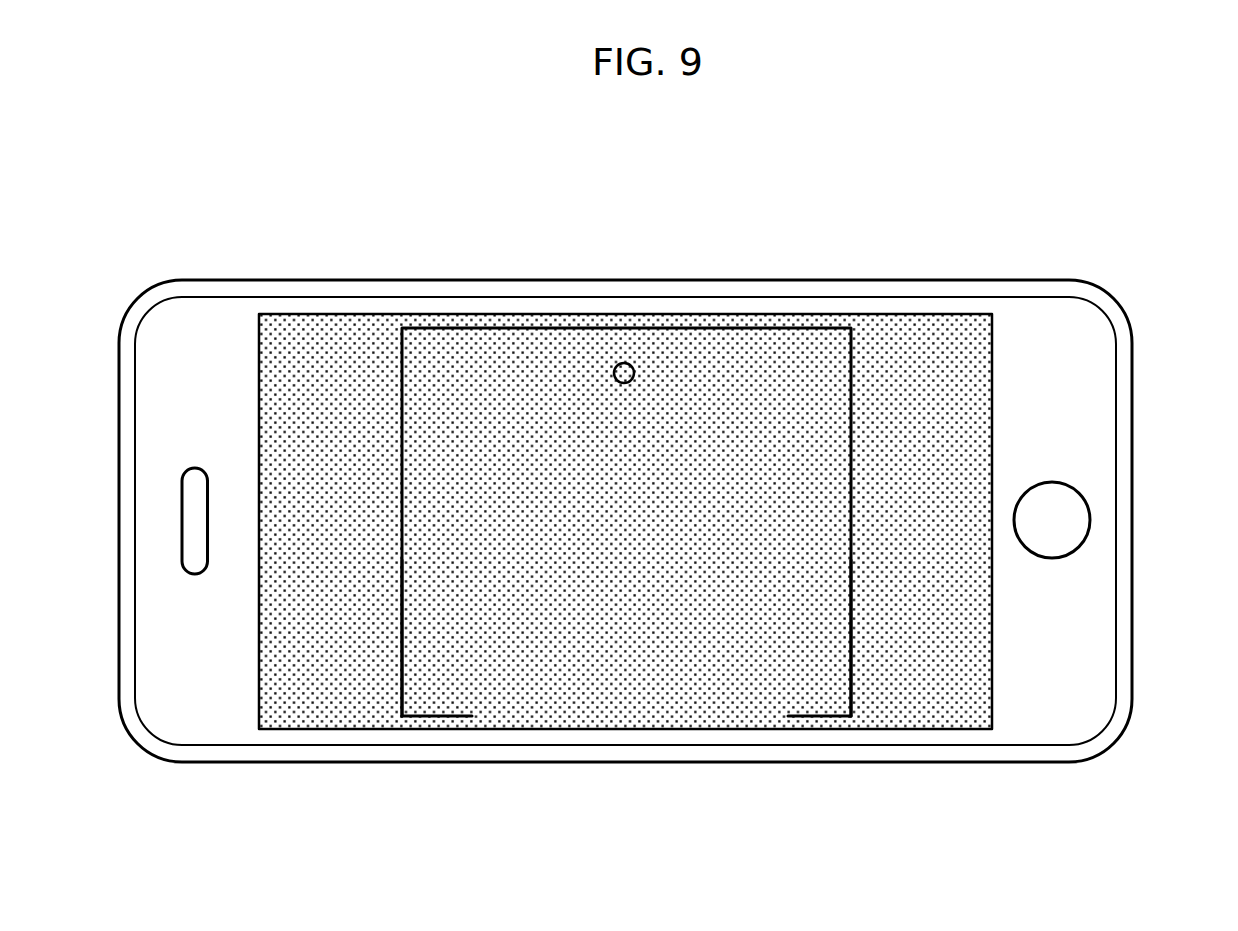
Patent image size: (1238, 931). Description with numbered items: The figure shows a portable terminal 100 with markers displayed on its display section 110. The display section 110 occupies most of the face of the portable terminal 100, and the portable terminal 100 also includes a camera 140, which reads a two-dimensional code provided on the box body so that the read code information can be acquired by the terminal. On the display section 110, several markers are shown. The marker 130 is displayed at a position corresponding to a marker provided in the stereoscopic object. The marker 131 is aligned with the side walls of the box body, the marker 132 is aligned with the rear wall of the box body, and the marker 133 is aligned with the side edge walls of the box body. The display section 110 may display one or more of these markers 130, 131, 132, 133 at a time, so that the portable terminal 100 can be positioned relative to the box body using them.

The portable terminal 100 is at (960, 244).
The display section 110 is at (992, 410).
The marker 130 is at (618, 362).
The marker 132 is at (715, 328).
The marker 131 is at (400, 627).
The marker 133 is at (440, 717).
The camera 140 is at (1090, 518).